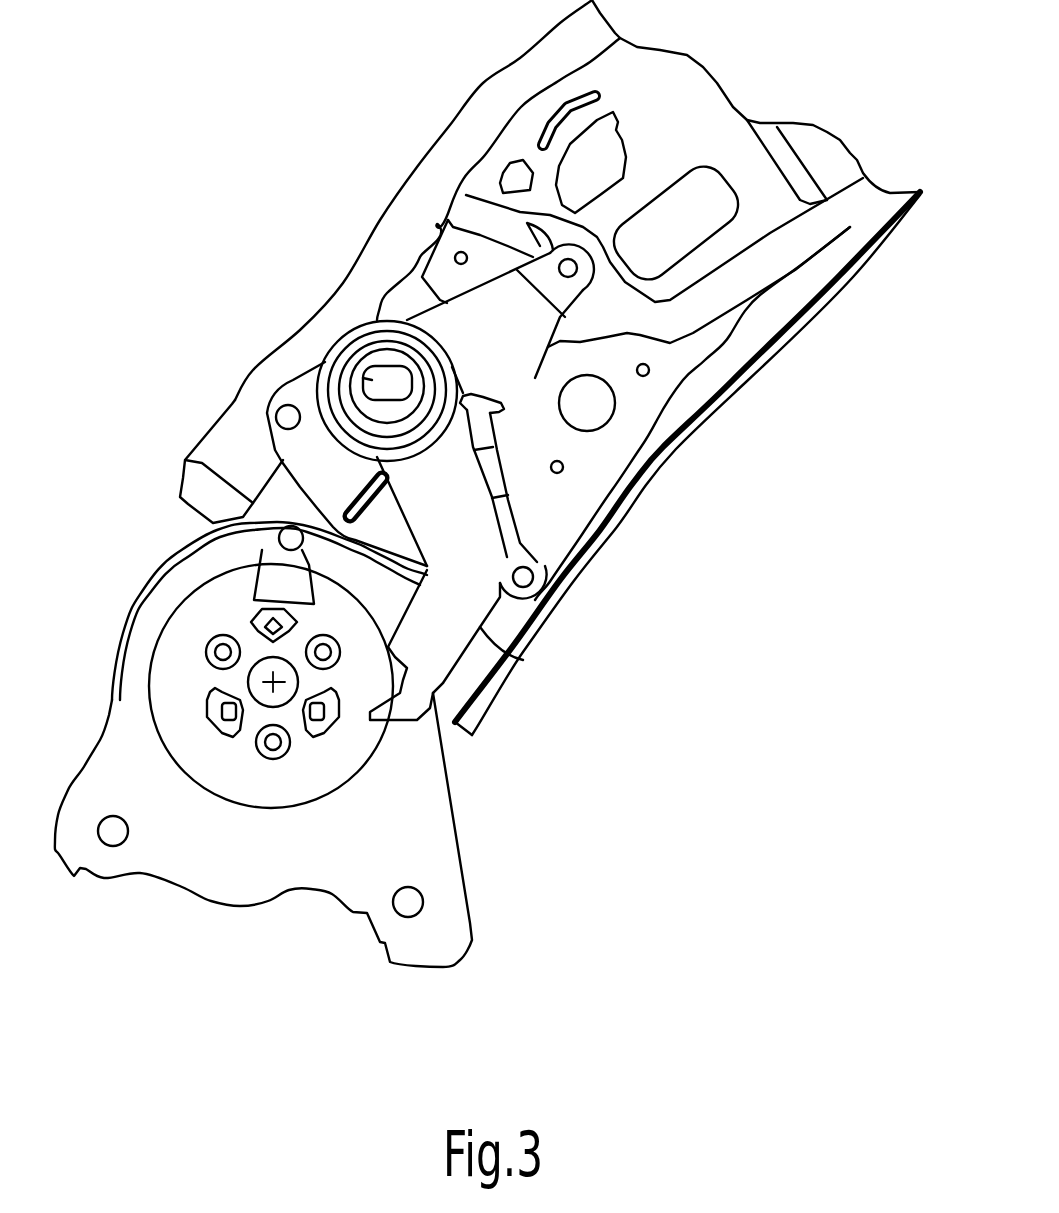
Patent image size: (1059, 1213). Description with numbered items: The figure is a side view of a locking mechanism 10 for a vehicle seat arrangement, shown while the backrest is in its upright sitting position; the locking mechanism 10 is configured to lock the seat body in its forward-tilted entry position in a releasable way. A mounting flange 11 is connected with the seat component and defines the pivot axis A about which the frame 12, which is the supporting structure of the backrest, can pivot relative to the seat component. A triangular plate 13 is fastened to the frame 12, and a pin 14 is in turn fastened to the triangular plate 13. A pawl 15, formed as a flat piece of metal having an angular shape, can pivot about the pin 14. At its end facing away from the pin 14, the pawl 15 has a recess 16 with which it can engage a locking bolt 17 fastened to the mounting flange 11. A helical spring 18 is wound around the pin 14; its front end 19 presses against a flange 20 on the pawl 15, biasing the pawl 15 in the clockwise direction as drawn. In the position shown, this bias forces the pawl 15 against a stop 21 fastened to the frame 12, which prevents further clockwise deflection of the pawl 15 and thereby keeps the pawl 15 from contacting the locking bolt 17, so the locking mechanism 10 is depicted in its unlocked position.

The locking mechanism 10 is at (223, 176).
The mounting flange 11 is at (447, 862).
The frame 12 is at (773, 320).
The triangular plate 13 is at (520, 402).
The pin 14 is at (368, 375).
The pawl 15 is at (527, 660).
The recess 16 is at (292, 699).
The locking bolt 17 is at (265, 540).
The helical spring 18 is at (355, 323).
The front end 19 is at (535, 378).
The flange 20 is at (507, 468).
The stop 21 is at (423, 571).
The pivot axis A is at (270, 682).